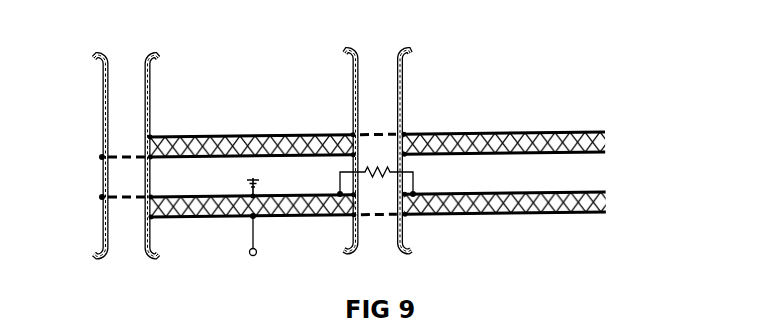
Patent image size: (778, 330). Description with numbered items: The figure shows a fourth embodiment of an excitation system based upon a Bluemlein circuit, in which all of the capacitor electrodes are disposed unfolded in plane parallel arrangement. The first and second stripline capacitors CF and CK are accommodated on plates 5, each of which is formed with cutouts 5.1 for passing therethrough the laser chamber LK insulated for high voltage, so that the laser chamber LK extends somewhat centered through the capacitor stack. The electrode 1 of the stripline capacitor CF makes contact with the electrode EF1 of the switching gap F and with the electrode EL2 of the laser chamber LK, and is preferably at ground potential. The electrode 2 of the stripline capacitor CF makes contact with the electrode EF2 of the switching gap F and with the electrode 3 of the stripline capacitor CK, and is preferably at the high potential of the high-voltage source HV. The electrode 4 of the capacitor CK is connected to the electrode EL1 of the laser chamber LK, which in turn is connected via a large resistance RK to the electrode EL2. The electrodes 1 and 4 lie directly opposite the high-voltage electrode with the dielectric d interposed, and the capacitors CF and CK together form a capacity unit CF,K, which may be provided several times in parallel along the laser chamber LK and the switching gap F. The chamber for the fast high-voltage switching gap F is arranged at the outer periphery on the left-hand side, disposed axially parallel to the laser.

The electrode of the stripline capacitor CF 1 is at (183, 197).
The electrode of the stripline capacitor CF 2 is at (245, 137).
The electrode of the stripline capacitor CK 3 is at (458, 137).
The electrode of the capacitor CK 4 is at (448, 157).
The plates 5 is at (575, 137).
The cutouts 5.1 is at (375, 137).
The dielectric d is at (528, 137).
The electrode of the switching gap EF1 is at (102, 70).
The electrode of the switching gap EF2 is at (150, 71).
The electrode of the laser chamber EL1 is at (350, 66).
The electrode of the laser chamber EL2 is at (404, 67).
The switching gap F is at (122, 220).
The laser chamber LK is at (387, 268).
The large resistance RK is at (365, 172).
The high-voltage source HV is at (256, 228).
The stripline capacitor CK is at (203, 244).
The stripline capacitor CF is at (495, 238).
The capacity unit CF,K is at (644, 177).